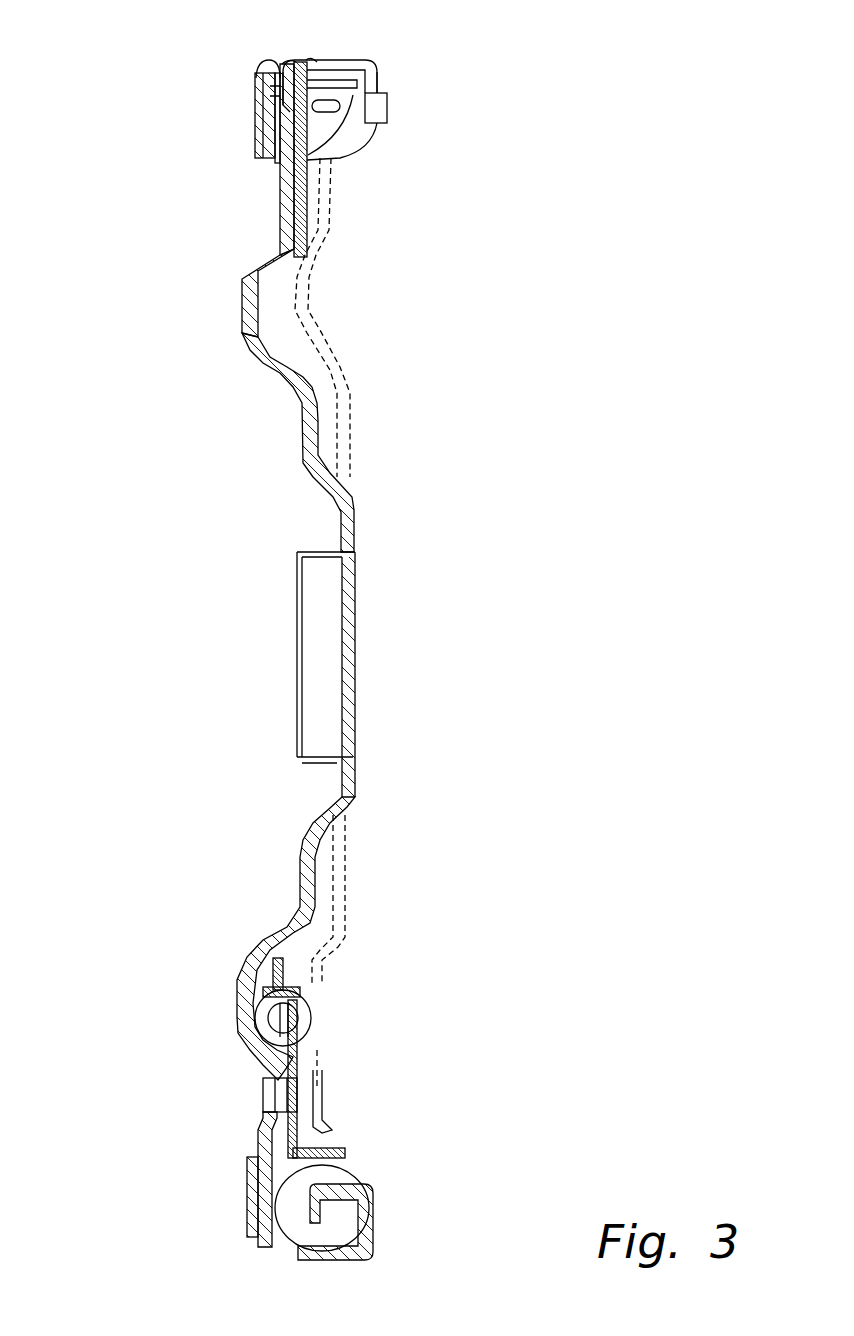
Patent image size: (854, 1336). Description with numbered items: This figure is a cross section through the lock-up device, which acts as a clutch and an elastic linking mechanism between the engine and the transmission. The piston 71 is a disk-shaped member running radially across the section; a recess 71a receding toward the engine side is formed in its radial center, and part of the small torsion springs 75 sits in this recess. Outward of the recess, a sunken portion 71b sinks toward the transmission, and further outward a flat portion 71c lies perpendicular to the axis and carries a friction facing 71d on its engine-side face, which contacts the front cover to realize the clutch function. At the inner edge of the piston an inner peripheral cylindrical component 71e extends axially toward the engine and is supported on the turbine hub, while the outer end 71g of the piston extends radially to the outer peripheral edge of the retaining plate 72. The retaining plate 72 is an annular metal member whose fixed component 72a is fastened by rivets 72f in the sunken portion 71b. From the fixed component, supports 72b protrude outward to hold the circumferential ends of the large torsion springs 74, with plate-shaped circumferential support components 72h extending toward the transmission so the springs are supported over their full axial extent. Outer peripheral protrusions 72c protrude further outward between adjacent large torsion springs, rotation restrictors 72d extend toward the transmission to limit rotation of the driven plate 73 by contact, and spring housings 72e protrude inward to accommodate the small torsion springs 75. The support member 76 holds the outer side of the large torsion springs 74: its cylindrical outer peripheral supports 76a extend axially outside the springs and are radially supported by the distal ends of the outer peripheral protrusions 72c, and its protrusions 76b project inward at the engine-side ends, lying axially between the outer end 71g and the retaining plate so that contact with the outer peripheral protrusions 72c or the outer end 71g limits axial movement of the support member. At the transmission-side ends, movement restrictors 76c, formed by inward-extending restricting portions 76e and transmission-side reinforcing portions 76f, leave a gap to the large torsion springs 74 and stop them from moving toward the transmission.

The piston 71 is at (281, 170).
The recess 71a is at (242, 300).
The sunken portion 71b is at (280, 232).
The flat portion 71c is at (255, 145).
The friction facing 71d is at (256, 125).
The inner peripheral cylindrical component 71e is at (320, 550).
The outer end 71g is at (265, 72).
The retaining plate 72 is at (307, 160).
The fixed component 72a is at (311, 238).
The supports 72b is at (272, 90).
The outer peripheral protrusions 72c is at (308, 58).
The rotation restrictors 72d is at (345, 1152).
The spring housings 72e is at (313, 1010).
The rivets 72f is at (262, 1090).
The circumferential support components 72h is at (388, 106).
The driven plate 73 is at (347, 872).
The large torsion springs 74 is at (347, 1170).
The small torsion springs 75 is at (310, 1022).
The support member 76 is at (373, 1224).
The outer peripheral supports 76a is at (378, 36).
The protrusions 76b is at (284, 68).
The movement restrictors 76c is at (385, 80).
The restricting portions 76e is at (362, 122).
The reinforcing portions 76f is at (393, 112).